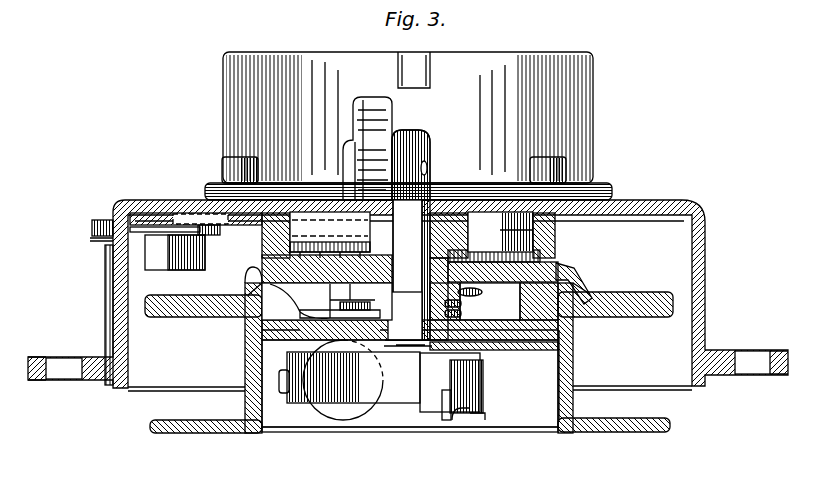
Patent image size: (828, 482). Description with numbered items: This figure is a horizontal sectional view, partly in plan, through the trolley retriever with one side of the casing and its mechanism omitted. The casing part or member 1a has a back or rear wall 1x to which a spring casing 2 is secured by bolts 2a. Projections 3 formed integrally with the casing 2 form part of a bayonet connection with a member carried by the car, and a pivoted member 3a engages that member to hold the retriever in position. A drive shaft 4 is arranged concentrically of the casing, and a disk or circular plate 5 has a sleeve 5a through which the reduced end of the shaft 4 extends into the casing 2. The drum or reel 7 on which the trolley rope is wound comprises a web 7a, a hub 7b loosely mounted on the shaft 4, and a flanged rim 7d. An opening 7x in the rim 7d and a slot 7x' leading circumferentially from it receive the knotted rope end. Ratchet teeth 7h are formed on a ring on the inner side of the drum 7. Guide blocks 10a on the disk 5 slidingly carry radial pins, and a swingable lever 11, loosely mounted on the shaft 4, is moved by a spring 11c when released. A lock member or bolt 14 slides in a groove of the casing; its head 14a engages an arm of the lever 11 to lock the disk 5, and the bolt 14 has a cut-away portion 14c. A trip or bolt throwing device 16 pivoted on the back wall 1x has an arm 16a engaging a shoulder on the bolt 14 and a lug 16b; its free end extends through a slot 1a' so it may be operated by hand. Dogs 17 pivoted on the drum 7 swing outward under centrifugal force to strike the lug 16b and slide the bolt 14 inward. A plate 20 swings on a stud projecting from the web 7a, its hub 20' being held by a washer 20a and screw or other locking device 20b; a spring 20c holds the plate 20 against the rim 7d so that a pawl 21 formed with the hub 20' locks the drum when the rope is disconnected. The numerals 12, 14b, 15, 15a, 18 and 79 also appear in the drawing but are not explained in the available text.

The back or rear wall 1x is at (640, 201).
The casing part or member 1a is at (408, 328).
The slot 1a' is at (85, 315).
The casing 2 is at (578, 130).
The bolts 2a is at (232, 172).
The projections 3 is at (432, 76).
The pivoted member 3a is at (395, 122).
The drive shaft 4 is at (408, 273).
The disk or circular plate 5 is at (557, 262).
The sleeve 5a is at (330, 227).
The drum or reel 7 is at (187, 314).
The web 7a is at (518, 344).
The hub 7b is at (410, 331).
The flanged rim 7d is at (575, 383).
The ratchet teeth 7h is at (247, 297).
The opening 7x is at (343, 402).
The slot 7x' is at (287, 417).
The guide block 10a is at (326, 287).
The swingable lever 11 is at (472, 293).
The spring 11c is at (462, 311).
The insulating member 12 is at (330, 248).
The lock member or bolt 14 is at (160, 214).
The head 14a is at (300, 241).
The plate opening 14b is at (272, 230).
The cut-away portion 14c is at (187, 214).
The terminal member 15 is at (500, 232).
The terminal arm 15a is at (513, 237).
The trip or bolt throwing device 16 is at (112, 232).
The arm 16a is at (214, 237).
The lug 16b is at (180, 263).
The dogs 17 is at (577, 271).
The washer 18 is at (110, 239).
The plate 20 is at (353, 389).
The hub 20' is at (477, 398).
The washer 20a is at (480, 416).
The screw or other locking device 20b is at (462, 420).
The spring 20c is at (450, 382).
The pawl 21 is at (485, 407).
The inner housing boss 79 is at (244, 290).